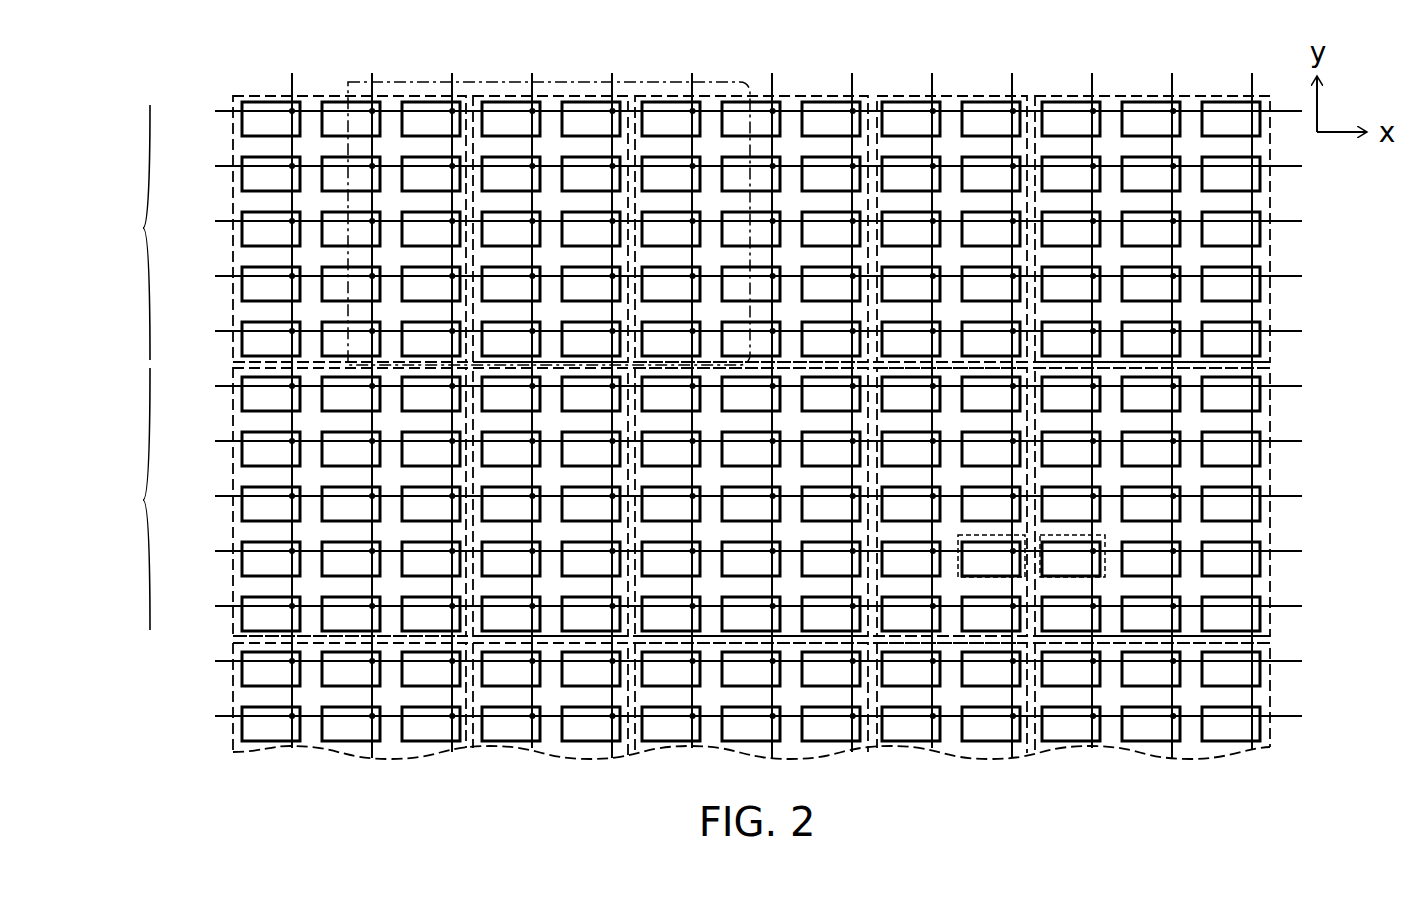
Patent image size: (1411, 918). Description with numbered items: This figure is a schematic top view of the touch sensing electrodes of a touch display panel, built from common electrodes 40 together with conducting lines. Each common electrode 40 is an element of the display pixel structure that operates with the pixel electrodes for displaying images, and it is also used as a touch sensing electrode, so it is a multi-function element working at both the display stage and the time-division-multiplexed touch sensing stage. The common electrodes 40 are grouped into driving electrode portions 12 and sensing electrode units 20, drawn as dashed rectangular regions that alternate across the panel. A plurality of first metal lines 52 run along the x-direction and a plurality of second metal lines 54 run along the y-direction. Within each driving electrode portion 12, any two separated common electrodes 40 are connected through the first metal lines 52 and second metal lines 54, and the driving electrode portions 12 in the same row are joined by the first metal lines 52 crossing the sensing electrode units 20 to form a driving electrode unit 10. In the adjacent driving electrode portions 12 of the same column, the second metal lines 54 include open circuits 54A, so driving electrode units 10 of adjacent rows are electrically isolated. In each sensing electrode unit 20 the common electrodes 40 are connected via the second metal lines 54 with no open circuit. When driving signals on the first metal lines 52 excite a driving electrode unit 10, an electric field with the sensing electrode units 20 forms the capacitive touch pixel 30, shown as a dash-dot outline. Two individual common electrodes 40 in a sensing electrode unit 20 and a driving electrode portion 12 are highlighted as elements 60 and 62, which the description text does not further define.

The driving electrode unit 10 is at (128, 367).
The driving electrode portion 12 is at (263, 95).
The sensing electrode unit 20 is at (487, 95).
The touch pixel 30 is at (353, 82).
The common electrode 40 is at (242, 122).
The first metal line 52 is at (215, 111).
The second metal line 54 is at (292, 748).
The open circuit 54A is at (230, 364).
The selected cell 60 is at (1073, 580).
The selected cell 62 is at (995, 580).